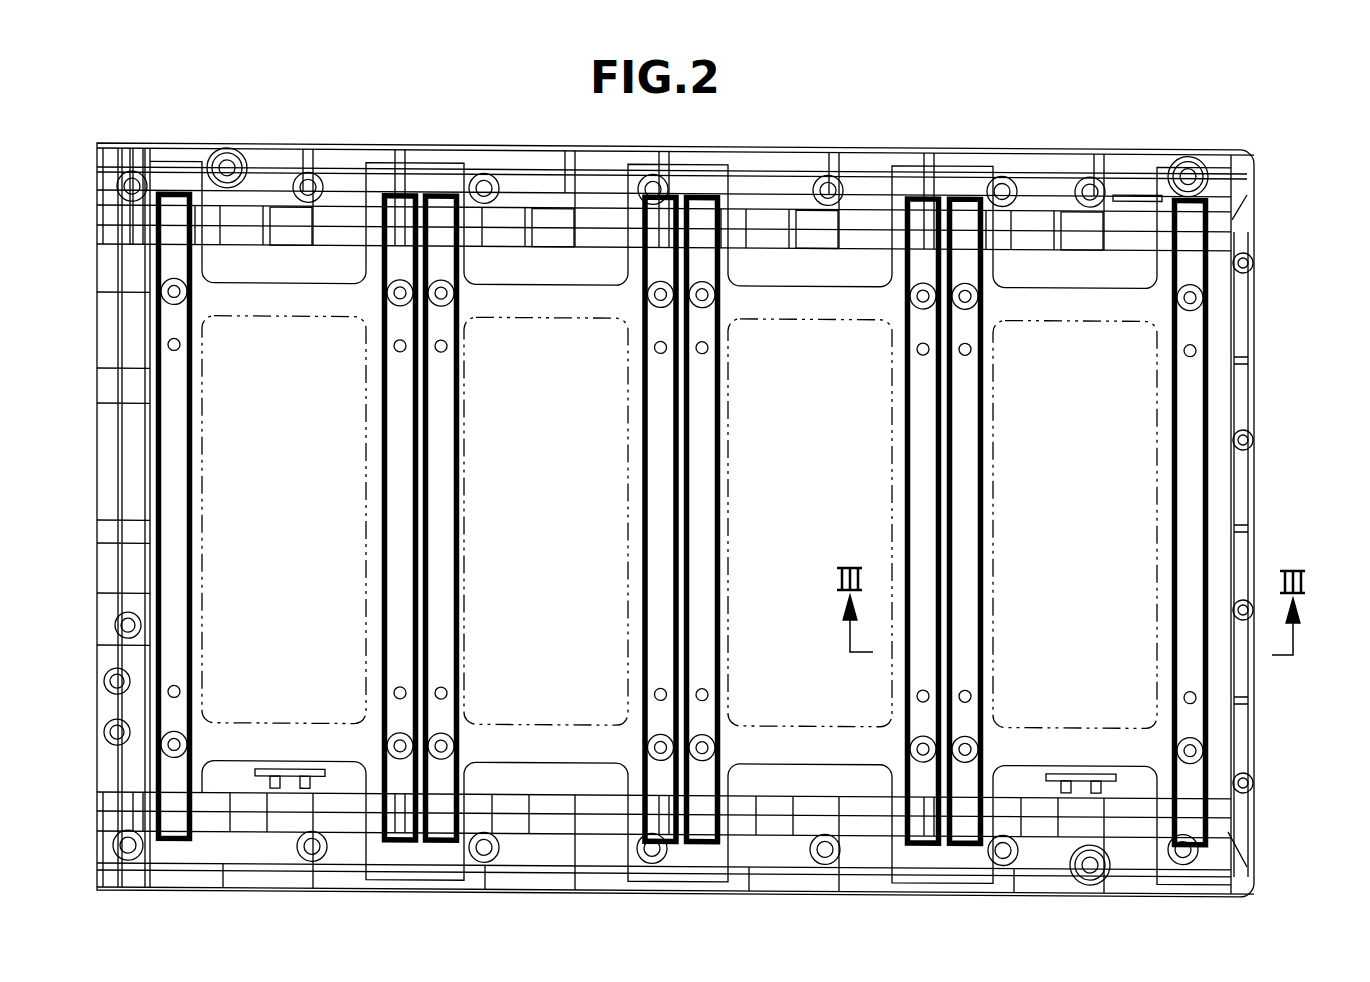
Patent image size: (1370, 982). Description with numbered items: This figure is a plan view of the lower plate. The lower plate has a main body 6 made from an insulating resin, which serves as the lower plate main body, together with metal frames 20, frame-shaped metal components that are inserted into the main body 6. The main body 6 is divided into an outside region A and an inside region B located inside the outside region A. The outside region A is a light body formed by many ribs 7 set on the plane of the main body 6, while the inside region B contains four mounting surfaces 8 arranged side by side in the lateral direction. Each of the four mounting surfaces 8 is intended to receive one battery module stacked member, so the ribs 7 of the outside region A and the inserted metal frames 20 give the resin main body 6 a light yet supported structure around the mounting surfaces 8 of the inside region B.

The main body 6 is at (1257, 318).
The ribs 7 is at (1253, 495).
The metal frames 20 is at (1210, 383).
The mounting surfaces 8 is at (271, 427).
The outside region A is at (1222, 672).
The inside region B is at (1120, 703).